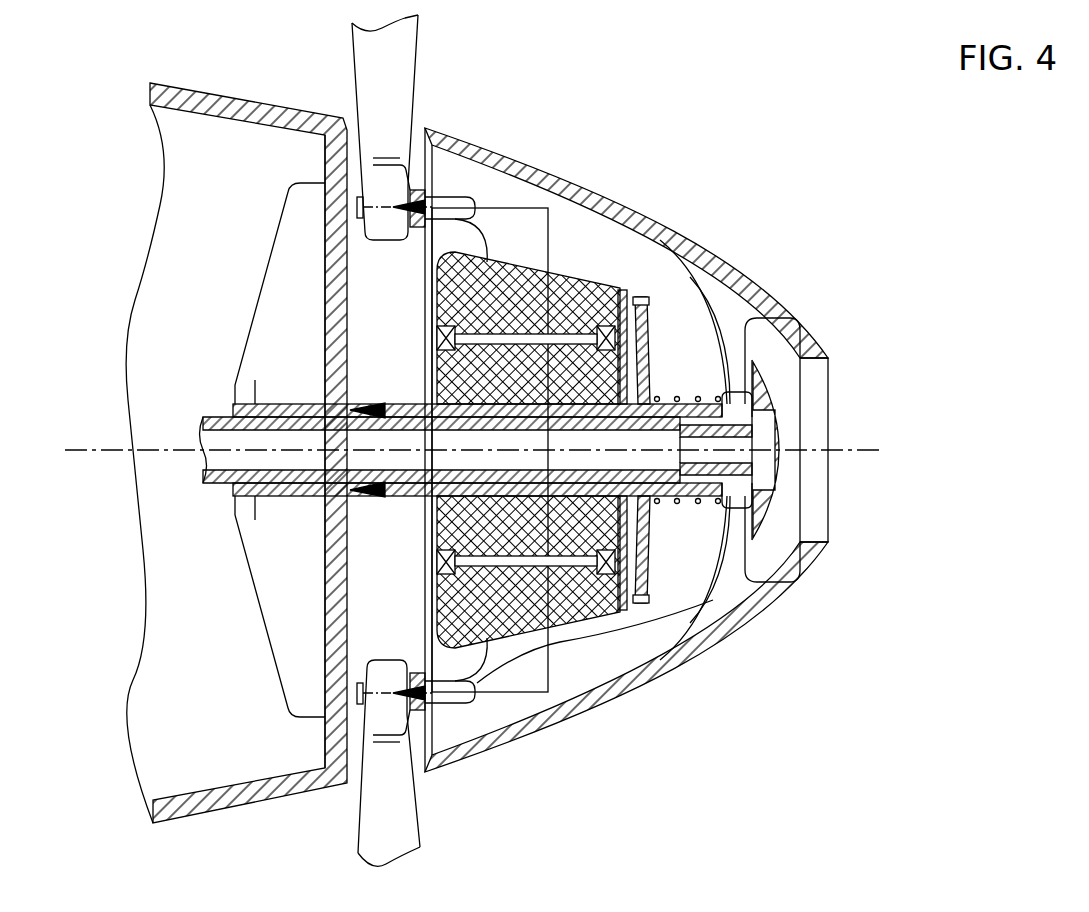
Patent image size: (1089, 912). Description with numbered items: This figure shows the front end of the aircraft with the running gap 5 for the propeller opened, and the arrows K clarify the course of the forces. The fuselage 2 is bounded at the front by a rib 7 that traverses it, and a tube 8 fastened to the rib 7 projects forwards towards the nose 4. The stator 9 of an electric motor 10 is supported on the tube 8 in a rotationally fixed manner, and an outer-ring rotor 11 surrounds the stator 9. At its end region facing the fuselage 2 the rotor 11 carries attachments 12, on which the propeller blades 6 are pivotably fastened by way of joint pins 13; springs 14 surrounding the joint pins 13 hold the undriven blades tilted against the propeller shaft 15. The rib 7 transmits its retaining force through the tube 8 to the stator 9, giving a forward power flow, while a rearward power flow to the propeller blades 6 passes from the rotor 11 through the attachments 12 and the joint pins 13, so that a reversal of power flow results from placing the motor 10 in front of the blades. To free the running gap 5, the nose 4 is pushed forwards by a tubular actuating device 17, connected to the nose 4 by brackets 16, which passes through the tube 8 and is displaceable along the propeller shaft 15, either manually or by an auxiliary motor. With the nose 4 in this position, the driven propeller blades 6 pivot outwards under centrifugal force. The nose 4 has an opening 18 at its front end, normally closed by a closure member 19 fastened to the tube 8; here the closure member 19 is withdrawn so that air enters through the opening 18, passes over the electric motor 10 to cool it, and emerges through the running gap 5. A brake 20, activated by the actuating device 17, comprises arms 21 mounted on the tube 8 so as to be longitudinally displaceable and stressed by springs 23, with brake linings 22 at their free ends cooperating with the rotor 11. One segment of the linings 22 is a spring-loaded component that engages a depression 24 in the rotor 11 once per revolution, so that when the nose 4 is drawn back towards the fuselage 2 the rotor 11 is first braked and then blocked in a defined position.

The fuselage 2 is at (212, 185).
The nose 4 is at (590, 265).
The running gap 5 is at (417, 753).
The propeller blades 6 is at (385, 88).
The rib 7 is at (325, 297).
The tube 8 is at (255, 498).
The stator 9 is at (552, 633).
The electric motor 10 is at (518, 255).
The outer-ring rotor 11 is at (604, 284).
The attachments 12 is at (460, 667).
The joint pins 13 is at (444, 203).
The springs 14 is at (413, 200).
The propeller shaft 15 is at (82, 453).
The brackets 16 is at (737, 320).
The tubular actuating device 17 is at (227, 481).
The opening 18 is at (828, 357).
The closure member 19 is at (780, 477).
The brake 20 is at (662, 298).
The arms 21 is at (650, 540).
The brake linings 22 is at (642, 603).
The springs 23 is at (640, 545).
The depression 24 is at (640, 292).
The arrows K is at (526, 236).